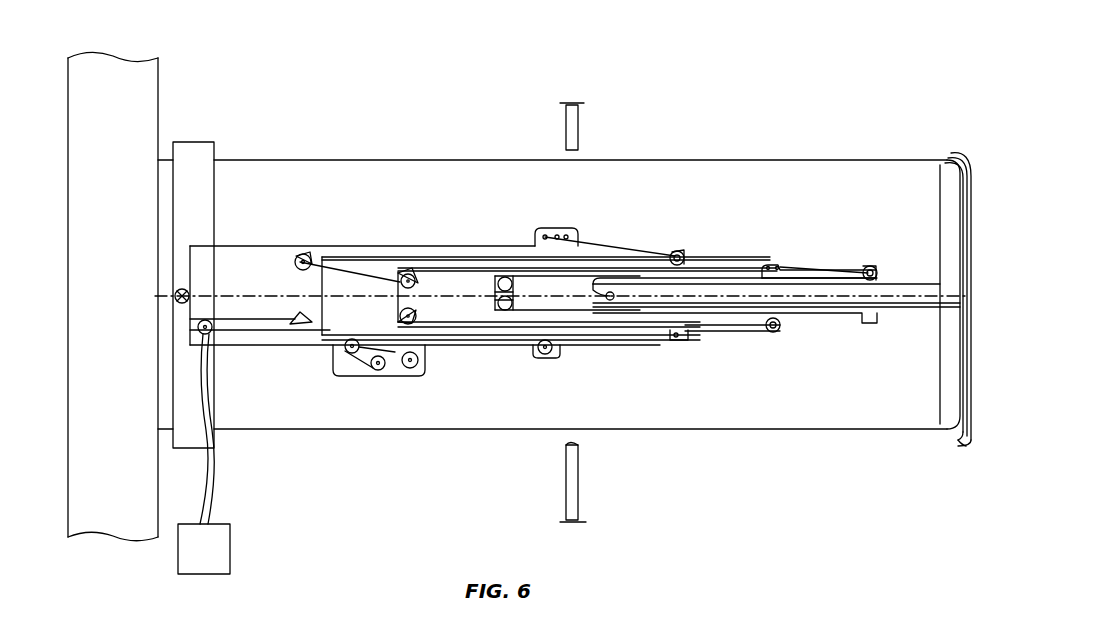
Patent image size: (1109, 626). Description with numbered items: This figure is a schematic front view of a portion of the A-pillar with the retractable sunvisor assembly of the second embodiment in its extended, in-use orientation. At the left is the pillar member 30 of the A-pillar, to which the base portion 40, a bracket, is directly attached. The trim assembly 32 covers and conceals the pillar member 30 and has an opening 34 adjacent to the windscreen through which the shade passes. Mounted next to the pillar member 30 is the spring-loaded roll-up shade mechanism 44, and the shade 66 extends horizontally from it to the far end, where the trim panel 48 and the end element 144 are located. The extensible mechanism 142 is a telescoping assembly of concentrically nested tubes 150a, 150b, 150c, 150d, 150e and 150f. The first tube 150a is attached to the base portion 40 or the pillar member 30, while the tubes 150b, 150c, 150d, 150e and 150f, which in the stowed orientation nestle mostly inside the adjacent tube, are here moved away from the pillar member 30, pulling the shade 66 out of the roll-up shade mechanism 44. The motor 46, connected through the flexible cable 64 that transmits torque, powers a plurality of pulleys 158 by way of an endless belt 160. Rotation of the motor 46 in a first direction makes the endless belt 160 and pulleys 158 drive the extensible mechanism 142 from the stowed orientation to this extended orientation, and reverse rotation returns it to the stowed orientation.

The pillar member 30 is at (118, 75).
The base portion 40 is at (163, 228).
The spring-loaded roll-up shade mechanism 44 is at (187, 140).
The motor 46 is at (232, 548).
The trim panel 48 is at (975, 360).
The trim assembly 32 is at (578, 118).
The opening 34 is at (578, 440).
The flexible shield/cable 64 is at (212, 495).
The shade 66 is at (367, 178).
The extensible mechanism 142 is at (682, 92).
The end cover 144 is at (950, 170).
The first tube 150a is at (262, 248).
The second tube 150b is at (372, 270).
The third tube 150c is at (450, 268).
The fourth tube 150d is at (583, 270).
The fifth tube 150e is at (725, 277).
The sixth tube 150f is at (822, 265).
The pulleys 158 is at (305, 255).
The endless belt 160 is at (700, 340).